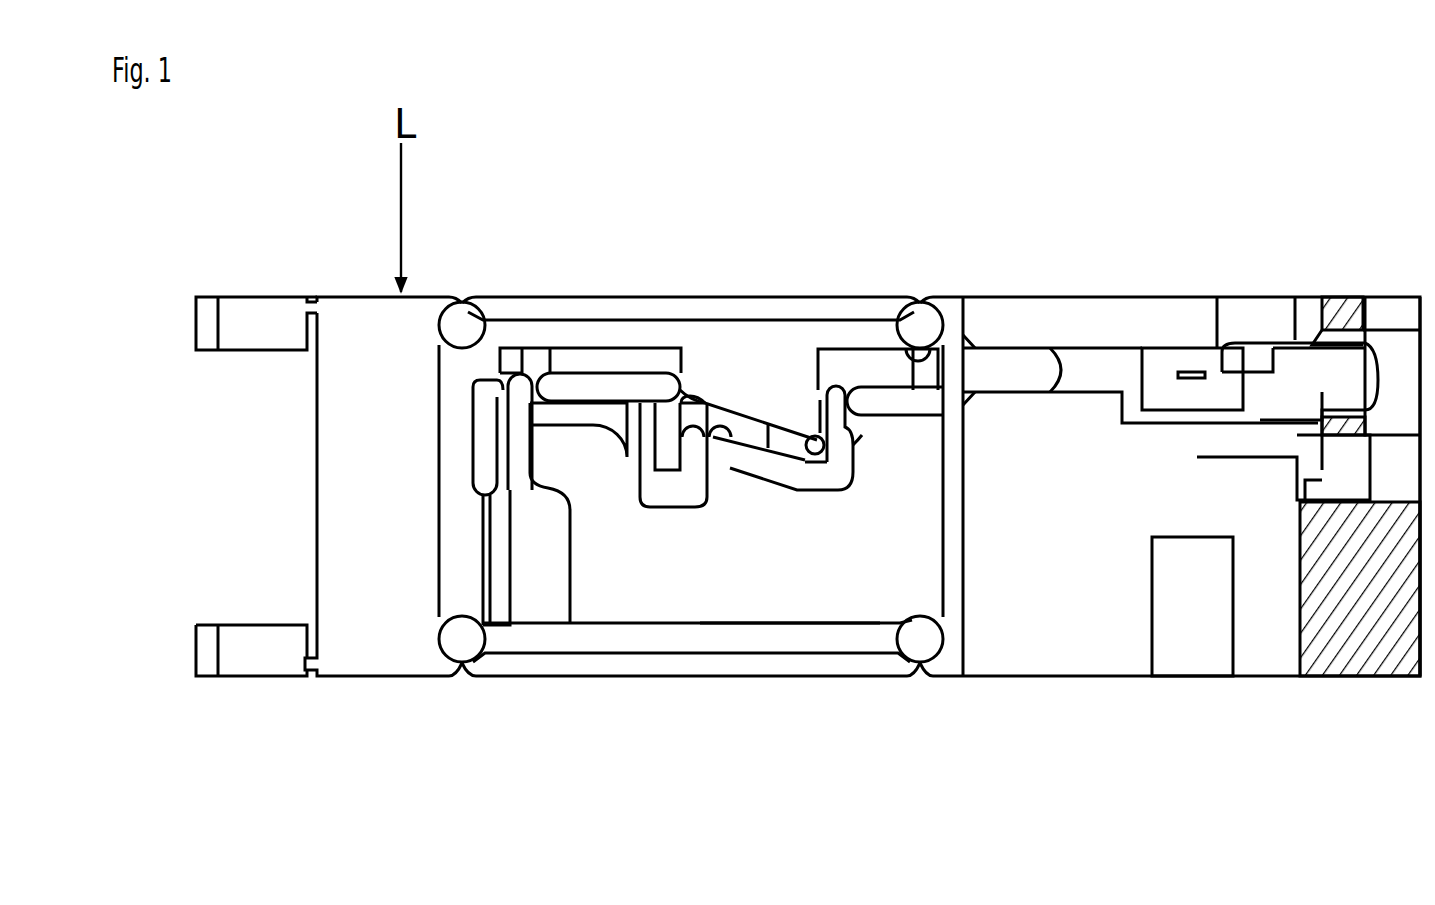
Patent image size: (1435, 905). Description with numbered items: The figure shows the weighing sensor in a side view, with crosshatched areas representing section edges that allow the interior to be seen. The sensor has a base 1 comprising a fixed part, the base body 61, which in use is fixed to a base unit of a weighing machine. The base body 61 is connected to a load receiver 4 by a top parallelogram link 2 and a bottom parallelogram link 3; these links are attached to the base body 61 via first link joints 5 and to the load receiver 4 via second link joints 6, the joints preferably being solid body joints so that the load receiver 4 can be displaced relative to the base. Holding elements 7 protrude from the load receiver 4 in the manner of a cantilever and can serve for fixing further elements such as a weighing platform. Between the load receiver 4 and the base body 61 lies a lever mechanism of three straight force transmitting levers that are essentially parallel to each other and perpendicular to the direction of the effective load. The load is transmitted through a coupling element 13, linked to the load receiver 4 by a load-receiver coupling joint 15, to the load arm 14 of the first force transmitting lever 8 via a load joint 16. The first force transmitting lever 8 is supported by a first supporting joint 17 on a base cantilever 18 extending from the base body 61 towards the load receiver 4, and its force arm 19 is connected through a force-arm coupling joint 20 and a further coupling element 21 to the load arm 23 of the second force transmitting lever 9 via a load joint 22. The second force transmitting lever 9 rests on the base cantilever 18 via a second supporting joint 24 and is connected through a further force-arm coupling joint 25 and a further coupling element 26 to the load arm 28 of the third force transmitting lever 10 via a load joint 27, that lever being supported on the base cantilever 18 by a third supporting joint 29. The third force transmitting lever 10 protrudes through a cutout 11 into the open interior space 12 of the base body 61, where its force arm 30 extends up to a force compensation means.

The base 1 is at (1330, 282).
The top parallelogram link 2 is at (820, 307).
The bottom parallelogram link 3 is at (866, 660).
The load receiver 4 is at (362, 323).
The first link joints 5 is at (926, 300).
The second link joints 6 is at (460, 300).
The holding elements 7 is at (237, 317).
The first force transmitting lever 8 is at (599, 340).
The second force transmitting lever 9 is at (710, 417).
The third force transmitting lever 10 is at (860, 367).
The cutout 11 is at (968, 345).
The open interior space 12 is at (1133, 323).
The coupling element 13 is at (477, 430).
The load arm 14 is at (510, 363).
The load-receiver coupling joint 15 is at (487, 480).
The load joint 16 is at (487, 388).
The first supporting joint 17 is at (567, 412).
The base cantilever 18 is at (798, 560).
The force arm 19 is at (571, 362).
The force-arm coupling joint 20 is at (686, 386).
The further coupling element 21 is at (655, 425).
The load joint 22 is at (715, 450).
The load arm 23 is at (680, 433).
The second supporting joint 24 is at (738, 447).
The further force-arm coupling joint 25 is at (853, 452).
The further coupling element 26 is at (818, 412).
The load joint 27 is at (813, 387).
The load arm 28 is at (832, 362).
The third supporting joint 29 is at (865, 418).
The force arm 30 is at (1022, 368).
The base body 61 is at (1342, 602).